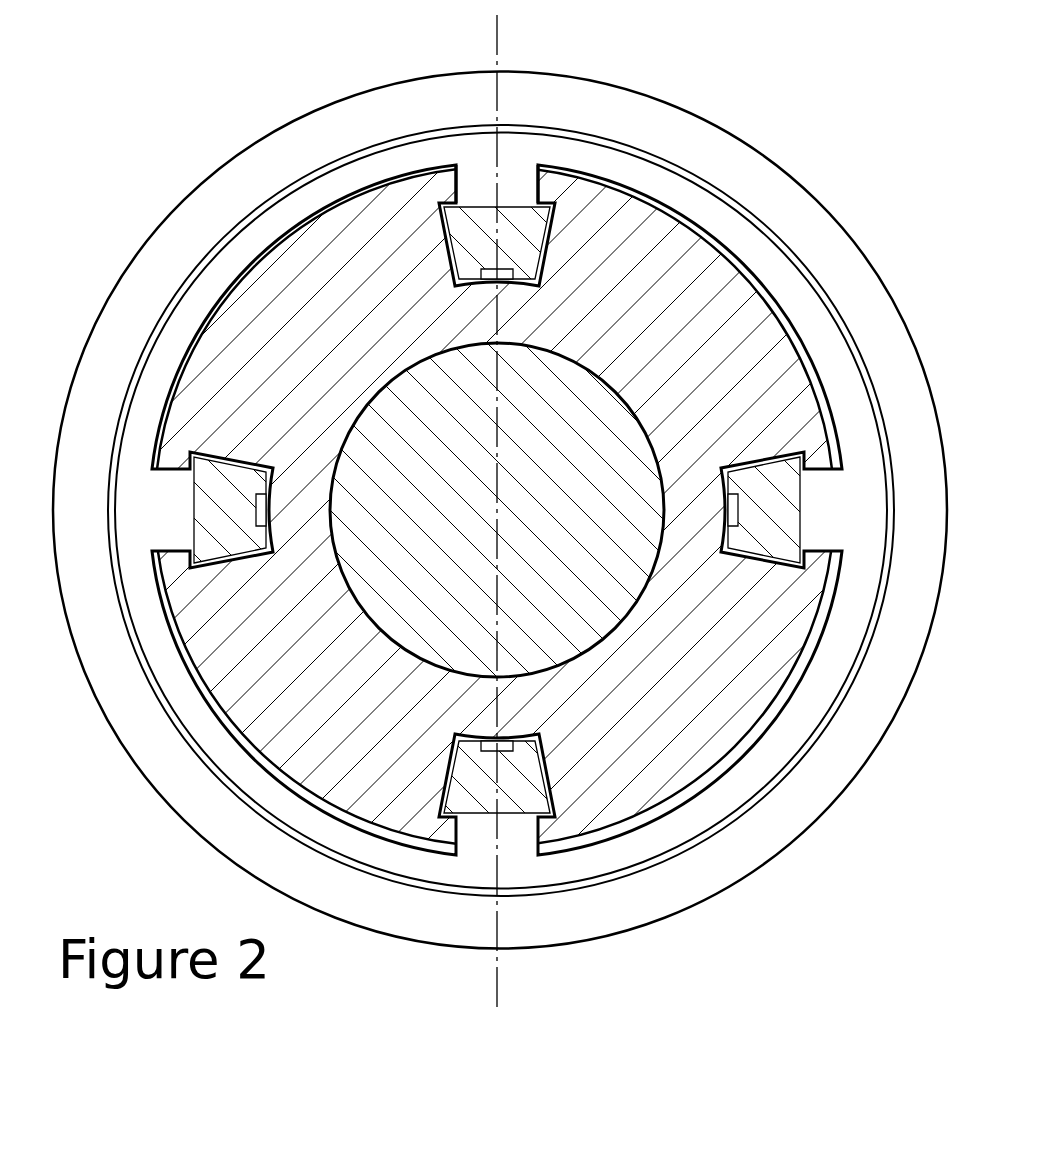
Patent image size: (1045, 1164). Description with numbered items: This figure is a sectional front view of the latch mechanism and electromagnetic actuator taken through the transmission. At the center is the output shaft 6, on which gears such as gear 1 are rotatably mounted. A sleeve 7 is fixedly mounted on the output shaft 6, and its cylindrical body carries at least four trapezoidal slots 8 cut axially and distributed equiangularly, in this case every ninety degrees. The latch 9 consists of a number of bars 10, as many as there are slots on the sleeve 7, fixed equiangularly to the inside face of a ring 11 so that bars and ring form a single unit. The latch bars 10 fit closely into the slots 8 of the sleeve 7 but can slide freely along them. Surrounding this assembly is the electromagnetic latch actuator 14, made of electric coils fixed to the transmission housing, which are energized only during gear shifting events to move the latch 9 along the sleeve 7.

The gear 1 is at (575, 993).
The output shaft 6 is at (615, 415).
The sleeve 7 is at (245, 305).
The trapezoidal slots 8 is at (540, 283).
The latch 9 is at (478, 185).
The latch bars 10 is at (524, 231).
The ring 11 is at (288, 212).
The electromagnetic latch actuator 14 is at (760, 183).